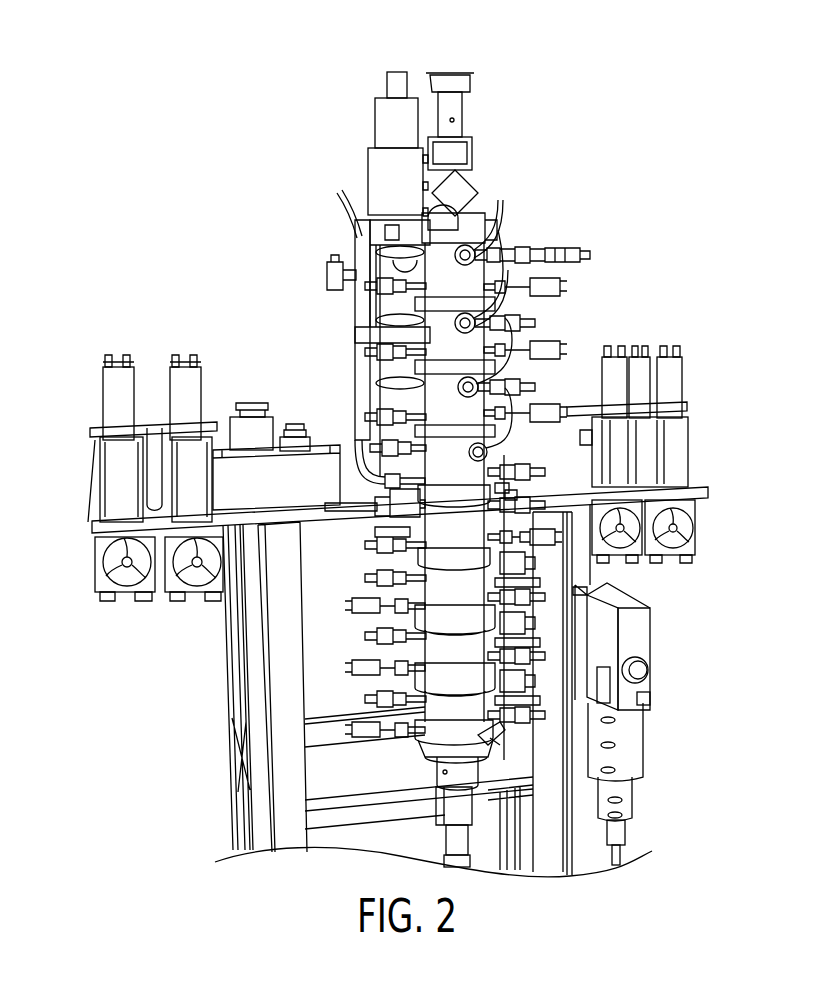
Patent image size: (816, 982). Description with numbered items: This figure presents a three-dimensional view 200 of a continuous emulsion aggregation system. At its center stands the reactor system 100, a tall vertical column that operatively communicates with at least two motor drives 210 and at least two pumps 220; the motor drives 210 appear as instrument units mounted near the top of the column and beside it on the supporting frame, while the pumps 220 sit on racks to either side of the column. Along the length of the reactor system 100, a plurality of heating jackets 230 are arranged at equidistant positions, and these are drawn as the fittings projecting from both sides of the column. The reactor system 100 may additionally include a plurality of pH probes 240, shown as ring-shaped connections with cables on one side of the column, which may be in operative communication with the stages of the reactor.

The reactor system 100 is at (455, 713).
The three-dimensional view 200 is at (228, 62).
The motor drives 210 is at (377, 232).
The pumps 220 is at (115, 412).
The heating jackets 230 is at (588, 254).
The pH probes 240 is at (478, 313).